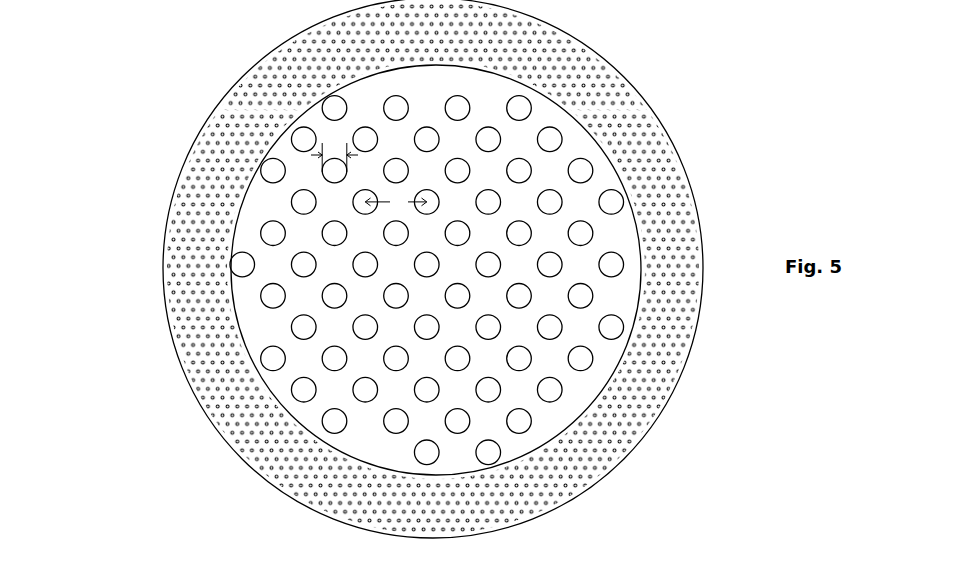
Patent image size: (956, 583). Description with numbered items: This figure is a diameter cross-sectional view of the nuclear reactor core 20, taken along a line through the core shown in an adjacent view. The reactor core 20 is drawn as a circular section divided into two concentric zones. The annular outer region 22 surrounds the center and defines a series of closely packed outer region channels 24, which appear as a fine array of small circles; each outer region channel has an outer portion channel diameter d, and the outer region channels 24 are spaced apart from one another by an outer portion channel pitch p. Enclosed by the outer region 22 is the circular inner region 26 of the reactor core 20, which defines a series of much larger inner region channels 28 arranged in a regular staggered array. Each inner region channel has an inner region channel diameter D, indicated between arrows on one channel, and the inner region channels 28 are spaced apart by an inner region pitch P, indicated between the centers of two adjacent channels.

The reactor core 20 is at (668, 130).
The outer region 22 is at (662, 192).
The outer region channels 24 is at (652, 120).
The inner region 26 is at (265, 205).
The inner region channels 28 is at (261, 358).